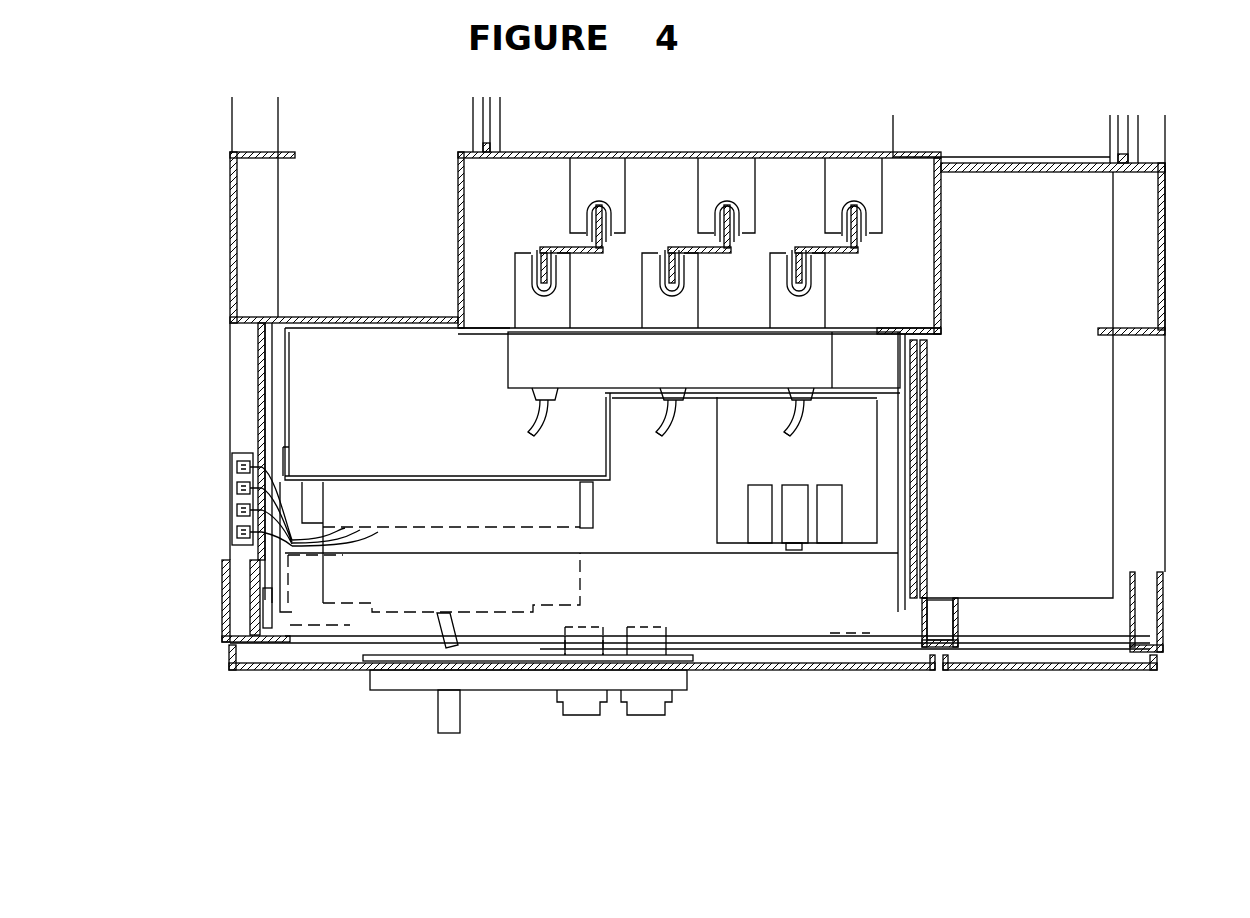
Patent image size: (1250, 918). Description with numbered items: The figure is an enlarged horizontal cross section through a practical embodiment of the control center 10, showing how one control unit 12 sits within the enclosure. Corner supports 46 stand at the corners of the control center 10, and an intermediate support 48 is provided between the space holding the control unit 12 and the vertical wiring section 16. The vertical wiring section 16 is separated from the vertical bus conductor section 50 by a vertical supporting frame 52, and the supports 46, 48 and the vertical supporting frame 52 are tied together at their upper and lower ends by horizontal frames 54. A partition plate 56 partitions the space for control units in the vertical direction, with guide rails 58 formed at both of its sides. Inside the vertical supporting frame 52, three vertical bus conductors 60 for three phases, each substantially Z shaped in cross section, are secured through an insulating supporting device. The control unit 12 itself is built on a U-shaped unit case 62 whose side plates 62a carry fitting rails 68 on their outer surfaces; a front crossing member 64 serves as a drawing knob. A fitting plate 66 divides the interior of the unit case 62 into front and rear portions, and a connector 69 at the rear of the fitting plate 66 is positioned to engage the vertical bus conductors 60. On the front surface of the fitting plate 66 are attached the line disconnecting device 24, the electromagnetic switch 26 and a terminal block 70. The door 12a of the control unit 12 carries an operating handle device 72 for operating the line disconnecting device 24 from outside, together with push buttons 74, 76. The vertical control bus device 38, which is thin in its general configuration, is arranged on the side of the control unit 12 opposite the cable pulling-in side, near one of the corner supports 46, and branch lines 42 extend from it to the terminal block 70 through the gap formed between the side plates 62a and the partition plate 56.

The control center 10 is at (295, 672).
The control unit 12 is at (1008, 138).
The door 12a is at (726, 672).
The vertical wiring section 16 is at (365, 235).
The line disconnecting device 24 is at (580, 537).
The electromagnetic switch 26 is at (717, 450).
The vertical control bus device 38 is at (240, 453).
The branch lines 42 is at (300, 485).
The corner supports 46 is at (222, 628).
The intermediate support 48 is at (958, 618).
The vertical bus conductor section 50 is at (522, 225).
The vertical supporting frame 52 is at (458, 270).
The horizontal frames 54 is at (1113, 525).
The partition plate 56 is at (858, 650).
The guide rails 58 is at (258, 357).
The vertical bus conductors 60 is at (592, 252).
The unit case 62 is at (382, 328).
The side plates 62a is at (285, 395).
The front crossing member 64 is at (788, 643).
The fitting plate 66 is at (437, 478).
The fitting rails 68 is at (268, 395).
The connector 69 is at (508, 366).
The terminal block 70 is at (593, 506).
The operating handle device 72 is at (500, 690).
The push button 74 is at (578, 715).
The push button 76 is at (646, 715).